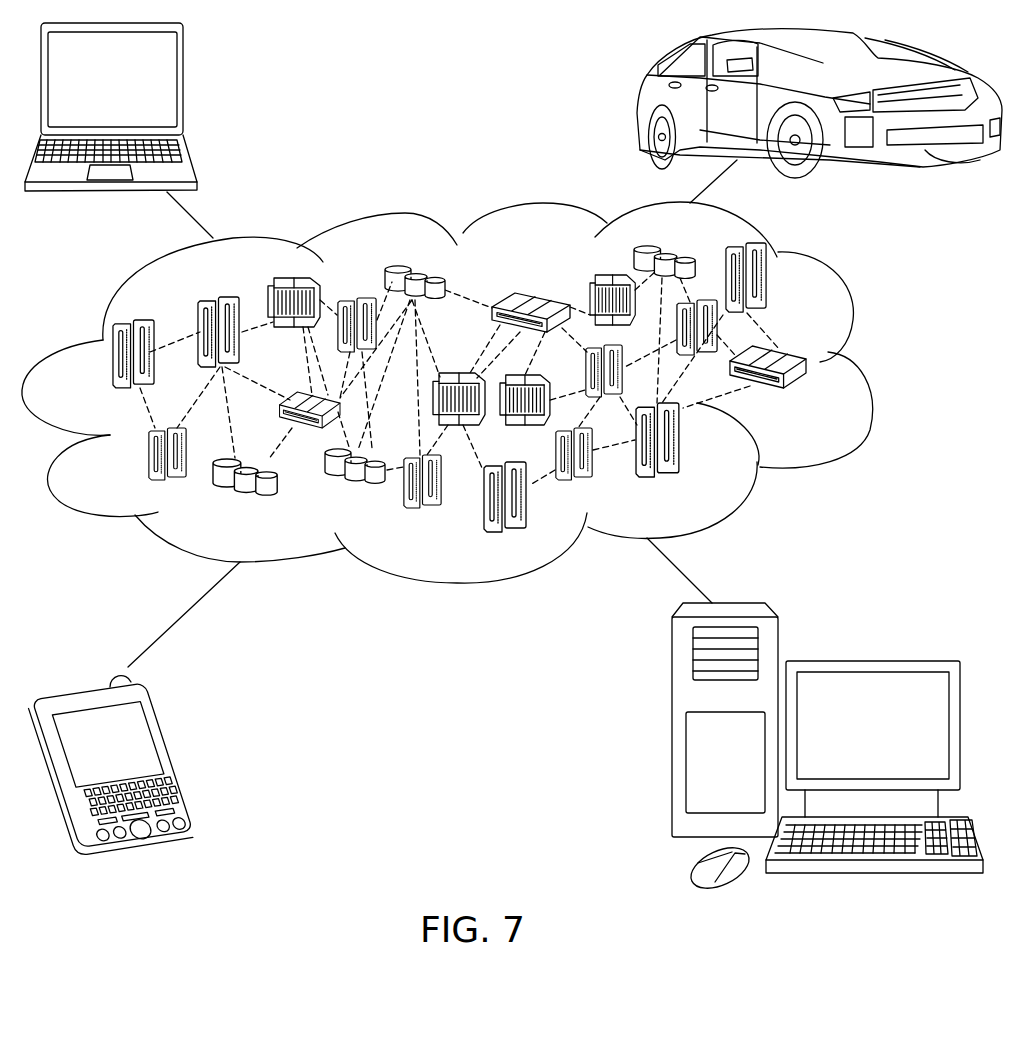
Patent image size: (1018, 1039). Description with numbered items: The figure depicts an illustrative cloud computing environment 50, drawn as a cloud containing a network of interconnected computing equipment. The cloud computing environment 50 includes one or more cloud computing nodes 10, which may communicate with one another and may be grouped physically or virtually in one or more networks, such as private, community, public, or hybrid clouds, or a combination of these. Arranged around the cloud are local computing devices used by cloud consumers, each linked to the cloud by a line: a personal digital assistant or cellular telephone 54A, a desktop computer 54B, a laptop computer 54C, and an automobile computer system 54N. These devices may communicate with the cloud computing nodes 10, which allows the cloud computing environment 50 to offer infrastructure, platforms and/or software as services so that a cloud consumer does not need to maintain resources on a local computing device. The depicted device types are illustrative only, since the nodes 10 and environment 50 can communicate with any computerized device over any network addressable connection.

The cloud computing node 10 is at (806, 396).
The cloud computing environment 50 is at (862, 365).
The personal digital assistant or cellular telephone 54A is at (170, 755).
The desktop computer 54B is at (868, 661).
The laptop computer 54C is at (185, 87).
The automobile computer system 54N is at (641, 100).